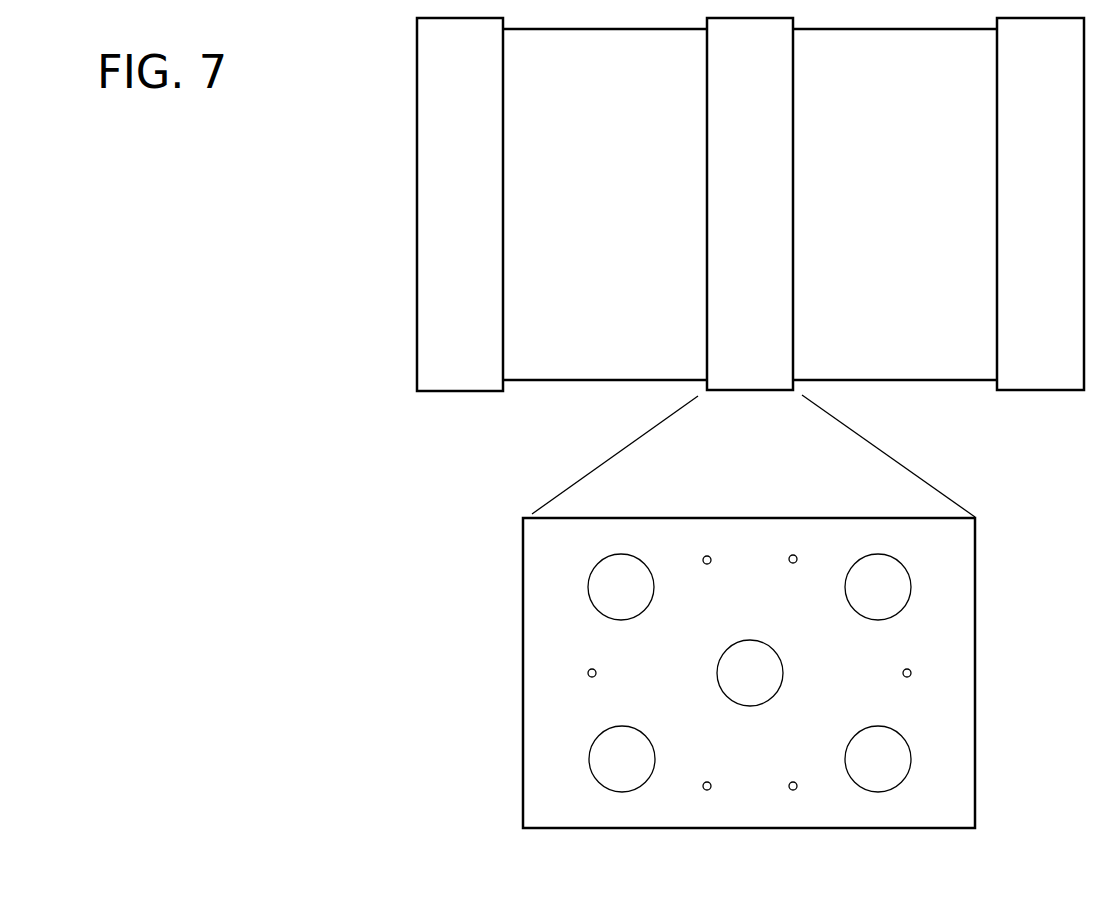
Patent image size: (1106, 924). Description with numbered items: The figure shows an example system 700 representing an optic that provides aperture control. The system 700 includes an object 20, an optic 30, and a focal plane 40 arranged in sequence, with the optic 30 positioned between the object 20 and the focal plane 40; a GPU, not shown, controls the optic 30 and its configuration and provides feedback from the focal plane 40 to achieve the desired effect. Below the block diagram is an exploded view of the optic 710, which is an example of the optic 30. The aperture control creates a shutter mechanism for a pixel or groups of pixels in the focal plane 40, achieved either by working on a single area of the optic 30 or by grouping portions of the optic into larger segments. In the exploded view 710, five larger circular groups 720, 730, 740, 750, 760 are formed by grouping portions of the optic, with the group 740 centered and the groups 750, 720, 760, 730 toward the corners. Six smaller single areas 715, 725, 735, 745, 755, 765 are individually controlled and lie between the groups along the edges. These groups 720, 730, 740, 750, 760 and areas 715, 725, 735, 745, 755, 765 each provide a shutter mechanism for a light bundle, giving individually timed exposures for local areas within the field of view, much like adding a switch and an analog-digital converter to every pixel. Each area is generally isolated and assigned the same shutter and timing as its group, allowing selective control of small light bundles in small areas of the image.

The system 700 is at (142, 159).
The object 20 is at (445, 369).
The optic 30 is at (736, 369).
The focal plane 40 is at (1026, 369).
The optic 710 is at (975, 518).
The single area 715 is at (707, 545).
The group 720 is at (878, 587).
The single area 725 is at (793, 545).
The group 730 is at (878, 759).
The single area 735 is at (793, 801).
The group 740 is at (750, 673).
The single area 745 is at (707, 801).
The group 750 is at (621, 587).
The single area 755 is at (592, 688).
The group 760 is at (622, 759).
The single area 765 is at (907, 688).